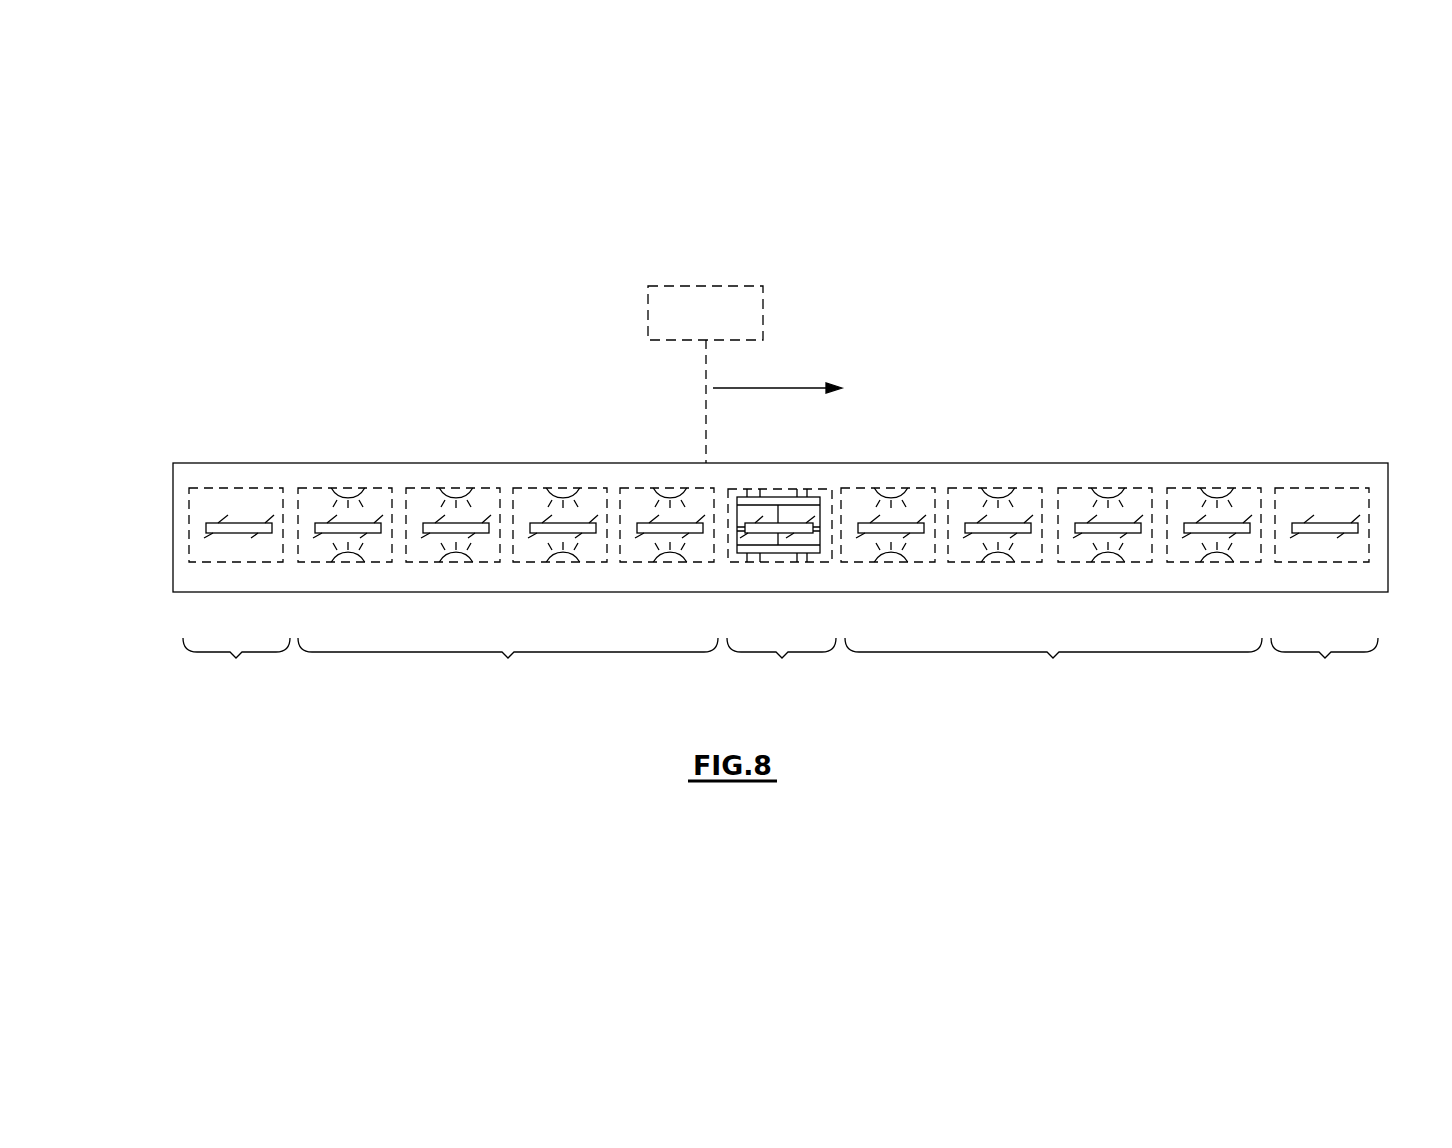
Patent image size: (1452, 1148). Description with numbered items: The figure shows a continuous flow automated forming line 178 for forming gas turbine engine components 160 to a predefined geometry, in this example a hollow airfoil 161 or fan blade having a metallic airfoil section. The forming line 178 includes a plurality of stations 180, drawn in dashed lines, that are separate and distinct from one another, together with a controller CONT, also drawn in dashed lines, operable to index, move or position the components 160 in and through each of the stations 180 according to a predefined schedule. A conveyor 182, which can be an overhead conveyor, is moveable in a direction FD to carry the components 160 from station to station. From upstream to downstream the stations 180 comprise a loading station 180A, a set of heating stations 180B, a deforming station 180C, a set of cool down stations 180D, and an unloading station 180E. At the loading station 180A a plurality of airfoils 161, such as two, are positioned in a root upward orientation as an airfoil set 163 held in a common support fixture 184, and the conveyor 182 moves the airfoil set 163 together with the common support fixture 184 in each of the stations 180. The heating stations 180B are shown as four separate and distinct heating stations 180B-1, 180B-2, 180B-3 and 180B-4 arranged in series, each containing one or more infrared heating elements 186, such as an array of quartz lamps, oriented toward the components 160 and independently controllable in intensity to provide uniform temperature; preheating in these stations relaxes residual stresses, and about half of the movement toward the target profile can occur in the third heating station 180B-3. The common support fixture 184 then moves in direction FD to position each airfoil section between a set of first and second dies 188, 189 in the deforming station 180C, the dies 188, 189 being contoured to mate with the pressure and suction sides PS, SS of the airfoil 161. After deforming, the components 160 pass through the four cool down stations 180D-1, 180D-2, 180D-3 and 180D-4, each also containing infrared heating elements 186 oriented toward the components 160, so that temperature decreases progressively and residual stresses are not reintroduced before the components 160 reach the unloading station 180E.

The forming line 178 is at (268, 268).
The conveyor 182 is at (203, 463).
The stations 180 is at (317, 488).
The loading station 180A is at (236, 604).
The heating stations 180B is at (508, 523).
The first heating station 180B-1 is at (390, 488).
The second heating station 180B-2 is at (496, 488).
The third heating station 180B-3 is at (593, 488).
The fourth heating station 180B-4 is at (632, 488).
The deforming station 180C is at (759, 543).
The cool down stations 180D is at (1054, 535).
The first cool down station 180D-1 is at (930, 488).
The second cool down station 180D-2 is at (967, 488).
The third cool down station 180D-3 is at (1117, 488).
The fourth cool down station 180D-4 is at (1172, 488).
The unloading station 180E is at (1324, 604).
The common support fixture 184 is at (227, 533).
The infrared heating elements 186 is at (347, 490).
The first die 188 is at (740, 513).
The second die 189 is at (800, 537).
The component 160 is at (273, 517).
The airfoil 161 is at (1358, 432).
The airfoil set 163 is at (207, 503).
The controller CONT is at (705, 374).
The direction FD is at (773, 388).
The pressure side PS is at (748, 540).
The suction side SS is at (788, 512).